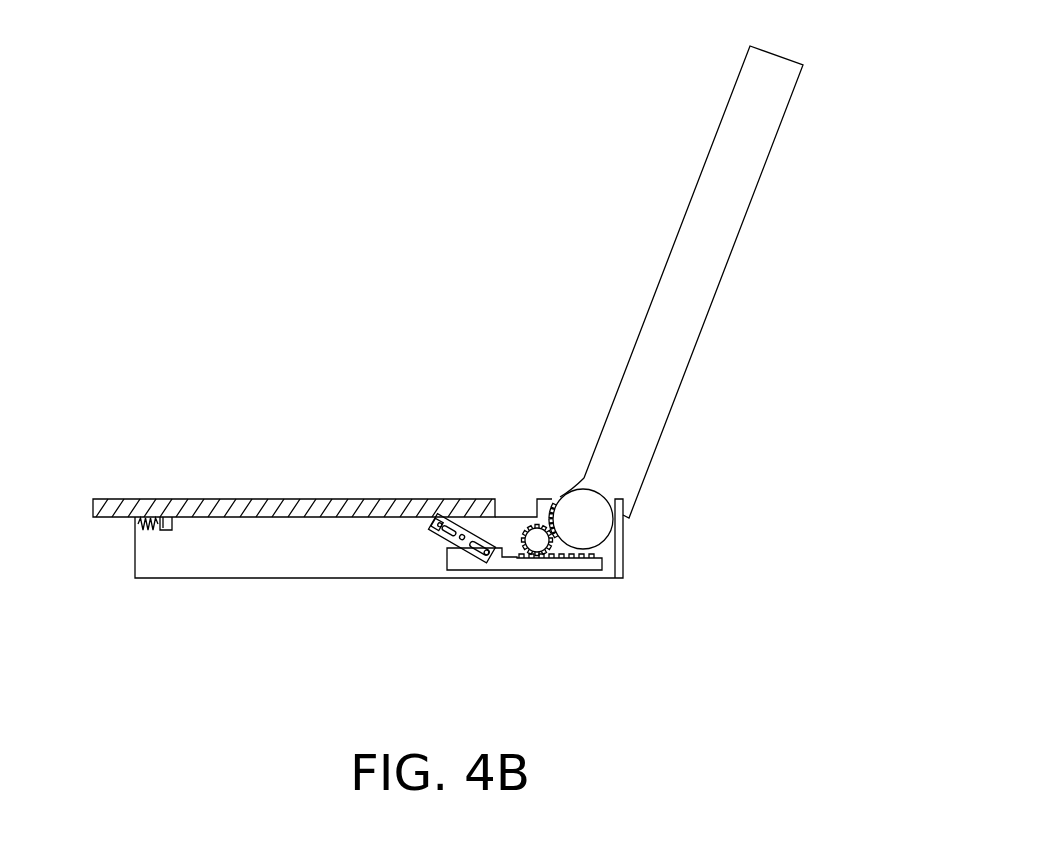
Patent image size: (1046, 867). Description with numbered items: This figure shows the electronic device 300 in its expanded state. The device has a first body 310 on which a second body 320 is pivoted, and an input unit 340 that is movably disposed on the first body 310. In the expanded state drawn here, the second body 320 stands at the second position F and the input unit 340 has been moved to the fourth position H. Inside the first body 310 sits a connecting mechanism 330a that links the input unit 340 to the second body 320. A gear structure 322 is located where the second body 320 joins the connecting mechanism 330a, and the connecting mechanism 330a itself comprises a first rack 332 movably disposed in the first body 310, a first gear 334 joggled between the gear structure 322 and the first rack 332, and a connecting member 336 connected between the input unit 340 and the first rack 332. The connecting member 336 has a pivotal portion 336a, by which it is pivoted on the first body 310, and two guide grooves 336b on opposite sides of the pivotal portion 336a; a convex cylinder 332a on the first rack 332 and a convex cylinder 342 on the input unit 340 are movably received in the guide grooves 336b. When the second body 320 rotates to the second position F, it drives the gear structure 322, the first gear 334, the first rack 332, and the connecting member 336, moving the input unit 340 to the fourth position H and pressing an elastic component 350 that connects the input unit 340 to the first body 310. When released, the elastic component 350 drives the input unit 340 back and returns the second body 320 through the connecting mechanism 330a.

The electronic device 300 is at (826, 691).
The first body 310 is at (212, 578).
The second body 320 is at (690, 368).
The gear structure 322 is at (557, 497).
The connecting mechanism 330a is at (441, 550).
The first rack 332 is at (529, 522).
The convex cylinder 332a is at (496, 549).
The first gear 334 is at (537, 540).
The connecting member 336 is at (378, 522).
The pivotal portion 336a is at (453, 526).
The guide grooves 336b is at (465, 522).
The input unit 340 is at (185, 497).
The convex cylinder 342 is at (428, 532).
The elastic component 350 is at (152, 531).
The fourth position H is at (94, 508).
The second position F is at (773, 147).